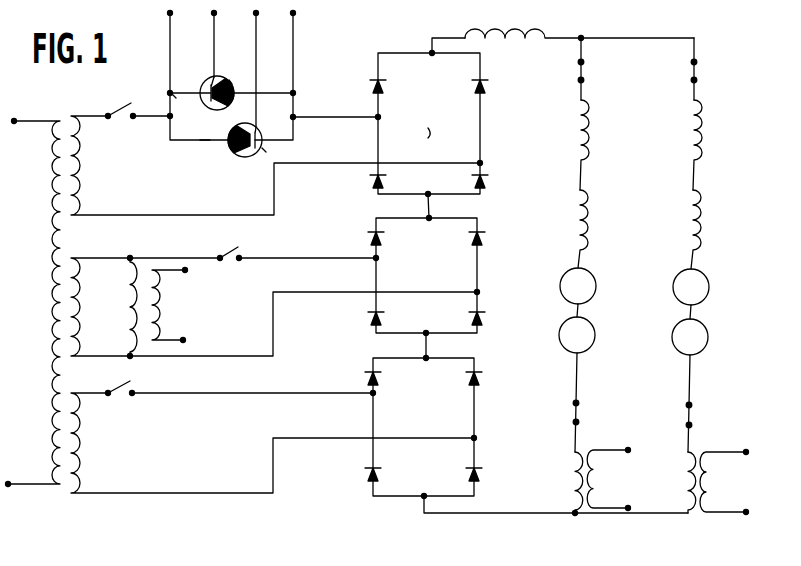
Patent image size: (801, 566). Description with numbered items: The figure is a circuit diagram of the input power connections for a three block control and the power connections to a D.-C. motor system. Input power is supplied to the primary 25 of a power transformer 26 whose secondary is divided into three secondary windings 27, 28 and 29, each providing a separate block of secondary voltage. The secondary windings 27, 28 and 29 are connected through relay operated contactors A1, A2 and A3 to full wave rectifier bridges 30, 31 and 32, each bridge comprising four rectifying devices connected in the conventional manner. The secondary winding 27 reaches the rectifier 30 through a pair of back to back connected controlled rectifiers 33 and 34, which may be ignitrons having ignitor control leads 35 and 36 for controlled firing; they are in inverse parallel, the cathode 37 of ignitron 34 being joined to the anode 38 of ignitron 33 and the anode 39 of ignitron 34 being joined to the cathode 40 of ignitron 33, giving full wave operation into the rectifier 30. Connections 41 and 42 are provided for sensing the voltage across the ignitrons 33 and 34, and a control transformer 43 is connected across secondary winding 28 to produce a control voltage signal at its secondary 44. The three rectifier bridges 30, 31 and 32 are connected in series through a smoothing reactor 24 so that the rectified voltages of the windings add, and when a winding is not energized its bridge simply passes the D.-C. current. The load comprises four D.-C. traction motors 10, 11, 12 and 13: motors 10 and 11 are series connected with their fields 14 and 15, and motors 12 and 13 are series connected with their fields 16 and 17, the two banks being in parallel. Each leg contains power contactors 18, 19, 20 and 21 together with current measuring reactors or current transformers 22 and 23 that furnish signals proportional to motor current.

The D.-C. traction motor 10 is at (588, 281).
The D.-C. traction motor 11 is at (589, 333).
The D.-C. traction motor 12 is at (703, 291).
The D.-C. traction motor 13 is at (703, 335).
The field 14 is at (588, 128).
The field 15 is at (588, 221).
The field 16 is at (704, 129).
The field 17 is at (698, 226).
The power contactor 18 is at (590, 70).
The power contactor 19 is at (578, 409).
The power contactor 20 is at (697, 73).
The power contactor 21 is at (693, 415).
The current measuring reactor 22 is at (574, 478).
The current measuring reactor 23 is at (683, 476).
The smoothing reactor 24 is at (512, 36).
The primary 25 is at (52, 195).
The power transformer 26 is at (75, 105).
The secondary winding 27 is at (81, 158).
The secondary winding 28 is at (82, 303).
The secondary winding 29 is at (79, 435).
The full wave rectifier bridge 30 is at (480, 115).
The full wave rectifier bridge 31 is at (480, 266).
The full wave rectifier bridge 32 is at (476, 409).
The controlled rectifier 33 is at (248, 157).
The controlled rectifier 34 is at (223, 80).
The ignitor control lead 35 is at (216, 70).
The ignitor control lead 36 is at (251, 128).
The cathode 37 is at (240, 80).
The anode 38 is at (269, 156).
The anode 39 is at (176, 98).
The cathode 40 is at (203, 143).
The connection 41 is at (165, 41).
The connection 42 is at (297, 29).
The control transformer 43 is at (127, 324).
The secondary 44 is at (159, 308).
The relay operated contactor A1 is at (115, 112).
The relay operated contactor A2 is at (119, 386).
The relay operated contactor A3 is at (223, 251).